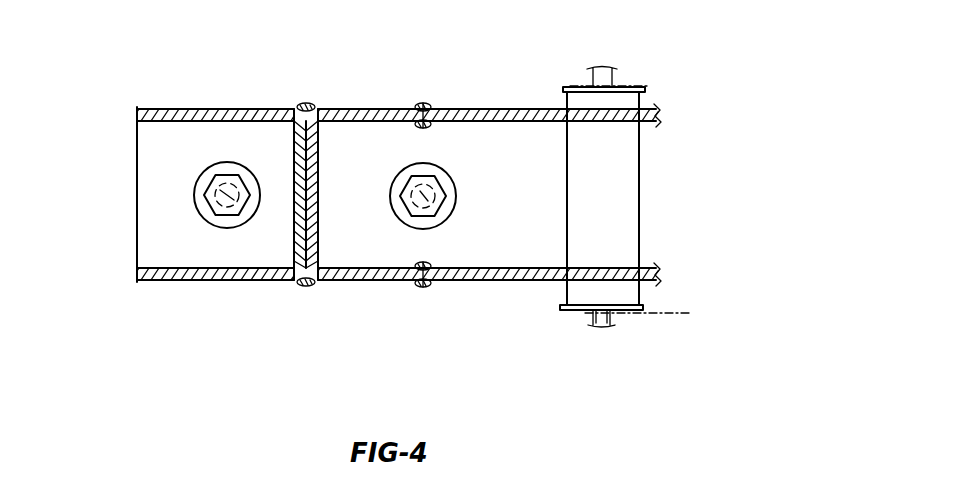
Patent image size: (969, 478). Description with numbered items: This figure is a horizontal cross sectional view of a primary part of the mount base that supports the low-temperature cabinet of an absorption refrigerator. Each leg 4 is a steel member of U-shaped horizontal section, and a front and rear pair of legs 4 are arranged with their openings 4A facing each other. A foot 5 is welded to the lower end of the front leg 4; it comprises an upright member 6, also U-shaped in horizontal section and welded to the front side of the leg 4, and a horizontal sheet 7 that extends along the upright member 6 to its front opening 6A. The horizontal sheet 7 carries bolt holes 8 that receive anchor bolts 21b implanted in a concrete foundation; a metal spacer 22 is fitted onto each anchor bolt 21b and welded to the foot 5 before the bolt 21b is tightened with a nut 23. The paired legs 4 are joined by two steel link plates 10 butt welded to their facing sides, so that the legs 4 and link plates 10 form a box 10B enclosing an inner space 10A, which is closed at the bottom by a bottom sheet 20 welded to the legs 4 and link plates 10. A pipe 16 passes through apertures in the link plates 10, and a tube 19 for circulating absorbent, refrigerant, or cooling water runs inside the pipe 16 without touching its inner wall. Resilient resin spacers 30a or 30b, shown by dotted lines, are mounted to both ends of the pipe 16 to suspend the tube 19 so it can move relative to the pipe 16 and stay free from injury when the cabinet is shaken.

The leg 4 is at (345, 106).
The opening 4A is at (378, 152).
The foot 5 is at (197, 108).
The upright member 6 is at (155, 108).
The front opening 6A is at (155, 208).
The horizontal sheet 7 is at (157, 152).
The bolt hole 8 is at (212, 206).
The link plate 10 is at (520, 112).
The inner space 10A is at (467, 143).
The box 10B is at (543, 112).
The pipe 16 is at (641, 100).
The tube 19 is at (613, 315).
The bottom sheet 20 is at (348, 230).
The anchor bolt 21b is at (229, 183).
The spacer 22 is at (258, 214).
The nut 23 is at (223, 228).
The spacer 30a is at (628, 77).
The spacer 30b is at (620, 317).